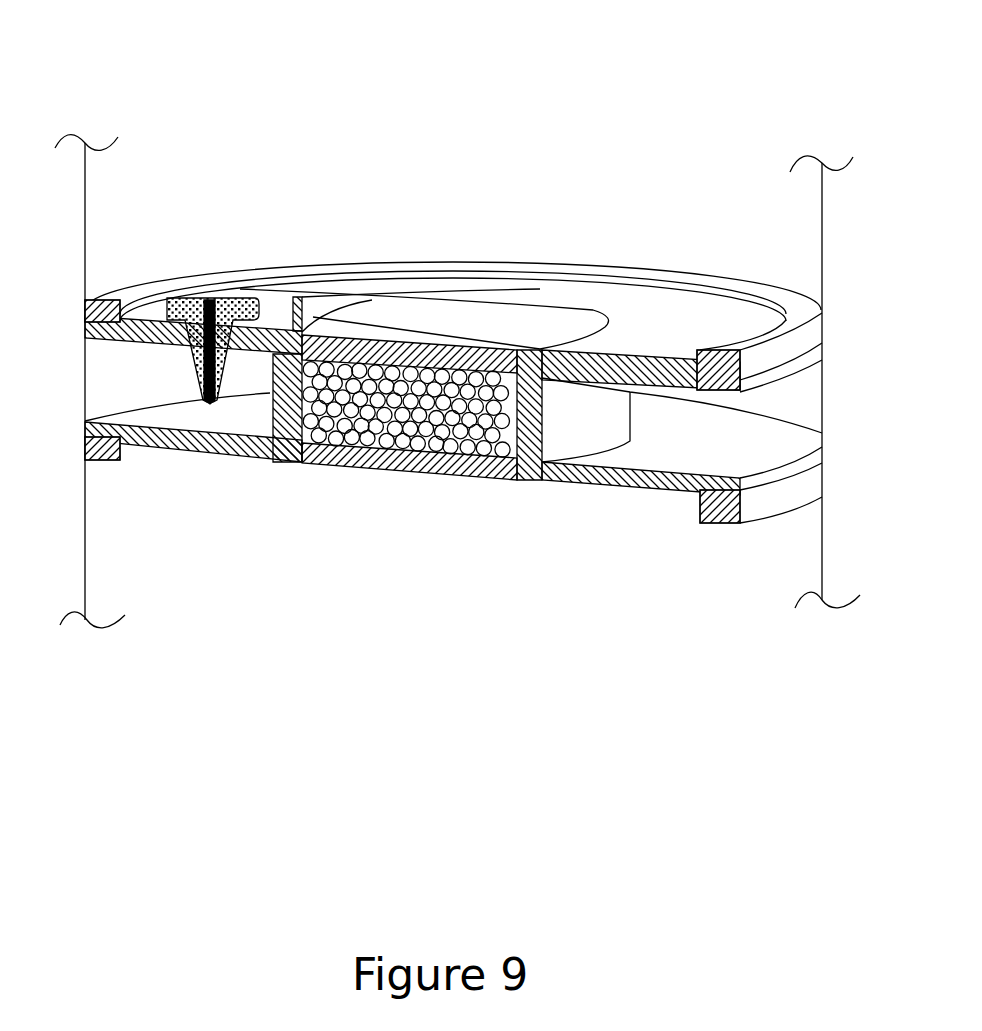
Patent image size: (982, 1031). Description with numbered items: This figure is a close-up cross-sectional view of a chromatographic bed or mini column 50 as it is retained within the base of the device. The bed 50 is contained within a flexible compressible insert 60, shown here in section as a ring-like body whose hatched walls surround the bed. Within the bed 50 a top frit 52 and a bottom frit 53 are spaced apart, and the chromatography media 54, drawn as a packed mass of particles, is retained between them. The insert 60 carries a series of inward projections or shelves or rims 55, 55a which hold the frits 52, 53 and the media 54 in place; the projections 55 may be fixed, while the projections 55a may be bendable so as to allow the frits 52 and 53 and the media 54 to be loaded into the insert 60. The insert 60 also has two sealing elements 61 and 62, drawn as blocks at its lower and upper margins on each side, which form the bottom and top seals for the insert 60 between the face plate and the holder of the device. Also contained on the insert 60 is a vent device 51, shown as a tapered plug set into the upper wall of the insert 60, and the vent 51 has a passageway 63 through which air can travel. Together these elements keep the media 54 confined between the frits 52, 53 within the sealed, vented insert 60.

The chromatographic bed 50 is at (494, 517).
The vent device 51 is at (213, 297).
The top frit 52 is at (407, 350).
The bottom frit 53 is at (450, 473).
The chromatography media 54 is at (390, 402).
The inward projections 55 is at (308, 466).
The bendable inward projections 55a is at (293, 297).
The flexible compressible insert 60 is at (470, 381).
The sealing element 61 is at (720, 523).
The sealing element 62 is at (757, 347).
The passageway 63 is at (203, 402).